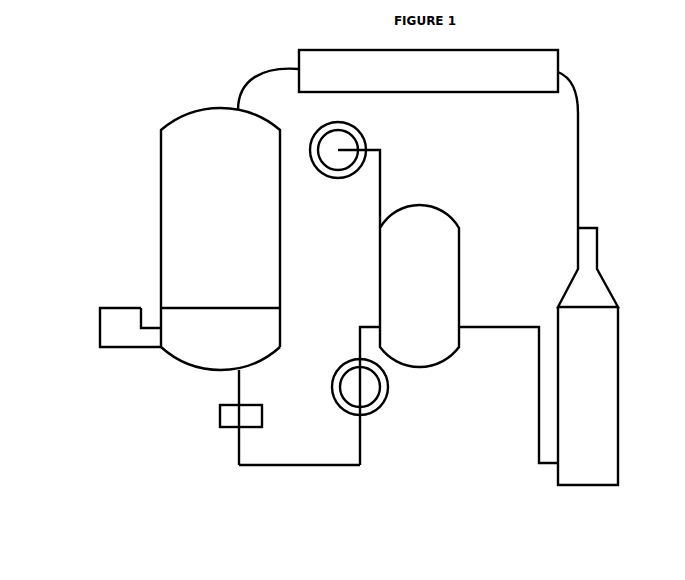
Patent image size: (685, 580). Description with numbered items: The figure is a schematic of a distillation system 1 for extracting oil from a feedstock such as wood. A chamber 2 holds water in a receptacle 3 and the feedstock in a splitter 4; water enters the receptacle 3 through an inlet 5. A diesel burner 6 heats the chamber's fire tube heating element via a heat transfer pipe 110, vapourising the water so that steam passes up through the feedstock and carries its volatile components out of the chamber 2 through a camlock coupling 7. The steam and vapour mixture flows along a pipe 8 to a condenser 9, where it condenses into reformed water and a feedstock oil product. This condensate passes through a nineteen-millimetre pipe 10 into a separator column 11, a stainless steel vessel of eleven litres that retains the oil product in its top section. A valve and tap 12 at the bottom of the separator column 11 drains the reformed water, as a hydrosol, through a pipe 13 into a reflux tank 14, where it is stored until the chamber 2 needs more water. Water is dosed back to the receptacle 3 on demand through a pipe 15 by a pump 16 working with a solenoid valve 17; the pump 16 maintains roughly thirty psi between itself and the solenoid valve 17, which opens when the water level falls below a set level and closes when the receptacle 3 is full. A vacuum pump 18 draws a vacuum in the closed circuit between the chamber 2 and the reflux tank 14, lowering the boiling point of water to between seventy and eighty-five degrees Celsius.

The distillation system 1 is at (75, 104).
The chamber 2 is at (158, 233).
The receptacle 3 is at (202, 347).
The splitter 4 is at (200, 307).
The inlet 5 is at (233, 372).
The diesel burner 6 is at (97, 325).
The camlock coupling 7 is at (232, 108).
The pipe 8 is at (260, 68).
The condenser 9 is at (538, 46).
The pipe 10 is at (580, 110).
The separator column 11 is at (621, 376).
The valve and tap 12 is at (554, 467).
The pipe 13 is at (508, 330).
The reflux tank 14 is at (435, 368).
The pipe 15 is at (317, 467).
The pump 16 is at (383, 405).
The solenoid valve 17 is at (220, 430).
The vacuum pump 18 is at (338, 185).
The heat transfer pipe 110 is at (141, 350).